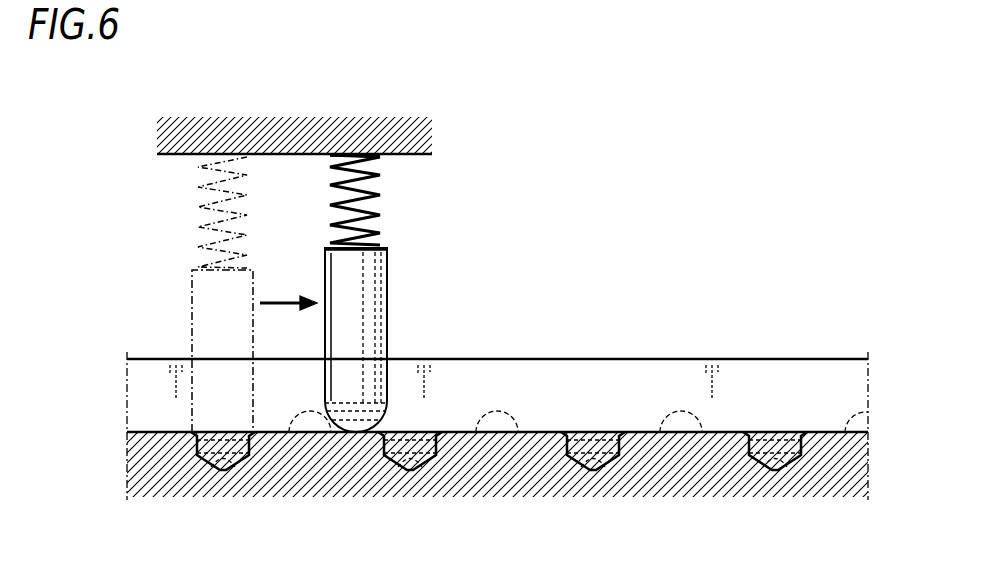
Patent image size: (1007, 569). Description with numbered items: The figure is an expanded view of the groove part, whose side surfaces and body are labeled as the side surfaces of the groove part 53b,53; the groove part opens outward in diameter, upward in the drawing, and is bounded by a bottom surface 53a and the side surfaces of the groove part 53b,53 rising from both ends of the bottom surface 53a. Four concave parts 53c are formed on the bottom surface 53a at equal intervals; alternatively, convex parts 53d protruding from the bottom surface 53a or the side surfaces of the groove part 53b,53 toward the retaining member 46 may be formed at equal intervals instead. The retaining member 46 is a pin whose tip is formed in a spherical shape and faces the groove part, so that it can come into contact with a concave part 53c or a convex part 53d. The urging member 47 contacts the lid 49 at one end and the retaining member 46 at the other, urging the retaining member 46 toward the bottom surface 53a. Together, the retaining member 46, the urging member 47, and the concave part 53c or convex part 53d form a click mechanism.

The lid 49 is at (281, 132).
The urging member 47 is at (218, 200).
The retaining member 46 is at (190, 322).
The side surfaces of groove part 53b,53 is at (590, 385).
The bottom surface 53a is at (535, 432).
The concave part 53c is at (235, 463).
The convex part 53d is at (297, 420).